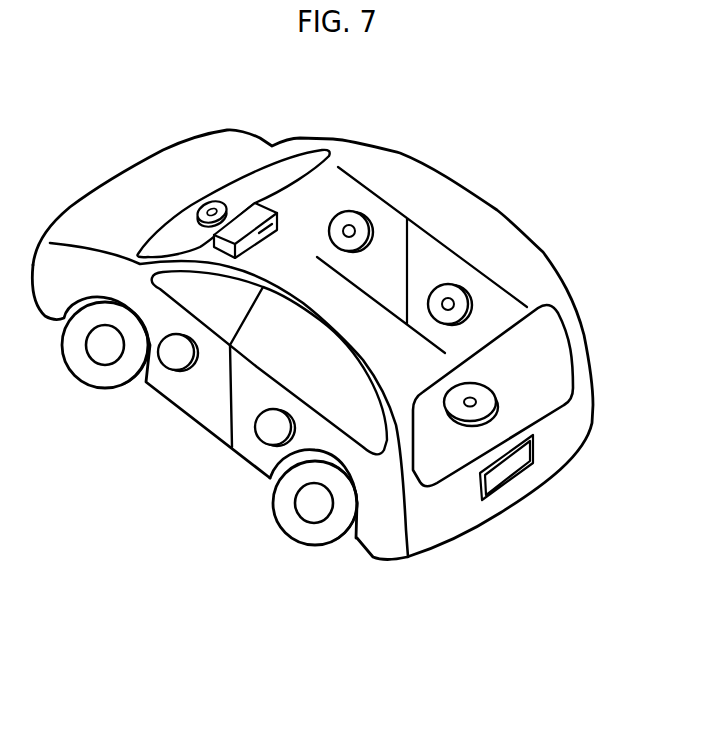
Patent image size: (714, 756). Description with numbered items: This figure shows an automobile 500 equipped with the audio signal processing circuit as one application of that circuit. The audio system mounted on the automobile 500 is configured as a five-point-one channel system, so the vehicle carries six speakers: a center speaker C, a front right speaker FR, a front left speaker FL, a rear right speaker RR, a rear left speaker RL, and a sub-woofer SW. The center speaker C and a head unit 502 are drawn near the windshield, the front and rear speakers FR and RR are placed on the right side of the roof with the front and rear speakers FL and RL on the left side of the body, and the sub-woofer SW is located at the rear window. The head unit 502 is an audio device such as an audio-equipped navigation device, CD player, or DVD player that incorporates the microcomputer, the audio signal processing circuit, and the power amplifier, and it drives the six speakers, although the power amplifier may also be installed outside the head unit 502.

The automobile 500 is at (357, 662).
The center speaker C is at (212, 201).
The head unit 502 is at (274, 217).
The front right speaker FR is at (361, 214).
The rear right speaker RR is at (462, 288).
The sub-woofer SW is at (480, 392).
The front left speaker FL is at (177, 362).
The rear left speaker RL is at (272, 430).